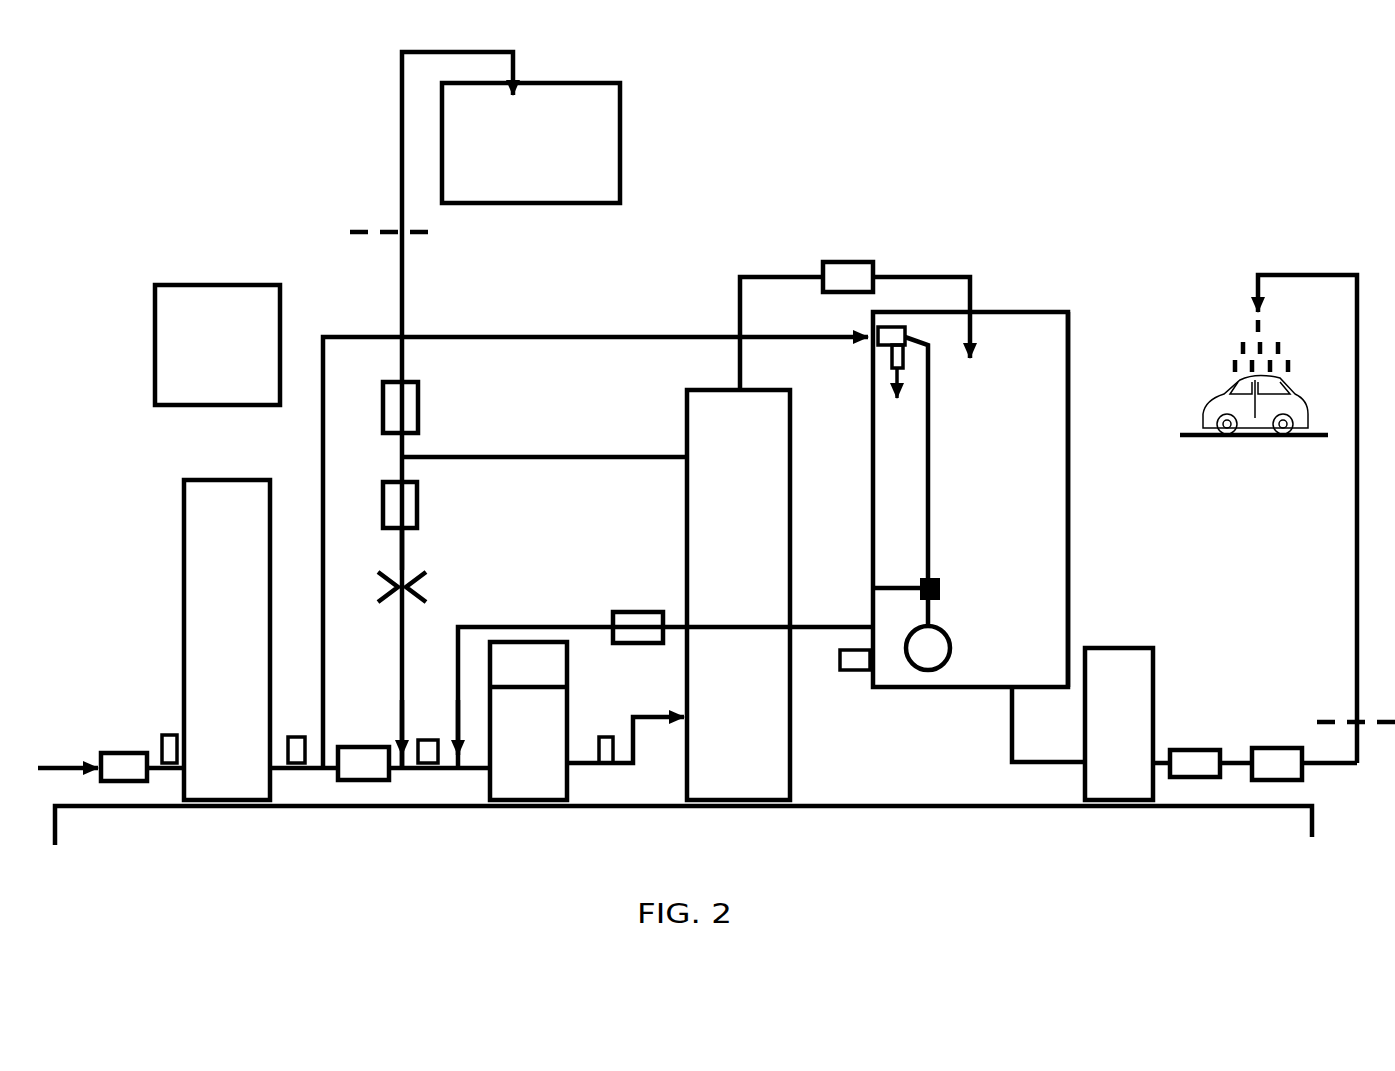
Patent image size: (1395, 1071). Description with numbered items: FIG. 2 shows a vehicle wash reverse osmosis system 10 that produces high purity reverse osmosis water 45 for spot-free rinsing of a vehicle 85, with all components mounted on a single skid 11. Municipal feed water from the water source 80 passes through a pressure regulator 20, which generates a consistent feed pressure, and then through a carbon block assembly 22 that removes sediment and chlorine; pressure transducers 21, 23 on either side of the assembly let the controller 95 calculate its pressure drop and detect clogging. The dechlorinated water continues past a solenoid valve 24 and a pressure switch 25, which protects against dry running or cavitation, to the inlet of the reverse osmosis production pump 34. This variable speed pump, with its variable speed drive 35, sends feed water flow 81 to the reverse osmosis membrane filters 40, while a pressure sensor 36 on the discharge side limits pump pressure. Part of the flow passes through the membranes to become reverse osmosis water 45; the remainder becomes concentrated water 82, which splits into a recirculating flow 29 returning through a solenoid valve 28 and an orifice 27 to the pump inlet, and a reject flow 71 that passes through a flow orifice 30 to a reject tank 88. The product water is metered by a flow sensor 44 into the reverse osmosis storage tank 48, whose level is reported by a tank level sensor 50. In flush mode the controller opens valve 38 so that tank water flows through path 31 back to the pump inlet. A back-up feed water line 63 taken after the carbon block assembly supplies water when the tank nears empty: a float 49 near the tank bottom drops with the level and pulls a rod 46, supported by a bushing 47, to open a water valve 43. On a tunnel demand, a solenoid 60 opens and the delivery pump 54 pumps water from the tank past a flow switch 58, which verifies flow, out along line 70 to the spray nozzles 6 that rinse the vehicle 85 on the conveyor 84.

The spray nozzles 6 is at (1250, 333).
The reverse osmosis system 10 is at (766, 195).
The skid 11 is at (962, 814).
The pressure regulator 20 is at (134, 776).
The pressure transducer 21 is at (168, 736).
The carbon block assembly 22 is at (222, 496).
The pressure transducer 23 is at (304, 764).
The solenoid valve 24 is at (364, 766).
The pressure switch 25 is at (428, 766).
The orifice 27 is at (424, 588).
The solenoid valve 28 is at (408, 504).
The recirculating flow 29 is at (414, 558).
The flow orifice 30 is at (414, 410).
The flow path 31 is at (494, 616).
The reverse osmosis production pump 34 is at (529, 786).
The variable speed drive 35 is at (532, 650).
The pressure sensor 36 is at (608, 735).
The valve 38 is at (630, 620).
The reverse osmosis membrane filters 40 is at (740, 754).
The water valve 43 is at (868, 340).
The reverse osmosis flow sensor 44 is at (854, 271).
The reverse osmosis water 45 is at (977, 336).
The rod 46 is at (924, 446).
The bushing 47 is at (918, 586).
The reverse osmosis storage tank 48 is at (1050, 460).
The float 49 is at (934, 660).
The tank level sensor 50 is at (856, 668).
The delivery pump 54 is at (1134, 665).
The flow switch 58 is at (1196, 754).
The solenoid 60 is at (1274, 754).
The feed water line 63 is at (502, 331).
The supply line 70 is at (1348, 660).
The reverse osmosis reject flow 71 is at (414, 327).
The water source 80 is at (64, 758).
The feed water flow 81 is at (656, 730).
The concentrated water 82 is at (584, 452).
The conveyor 84 is at (1224, 446).
The vehicle 85 is at (1245, 393).
The reject tank 88 is at (600, 168).
The controller 95 is at (235, 301).